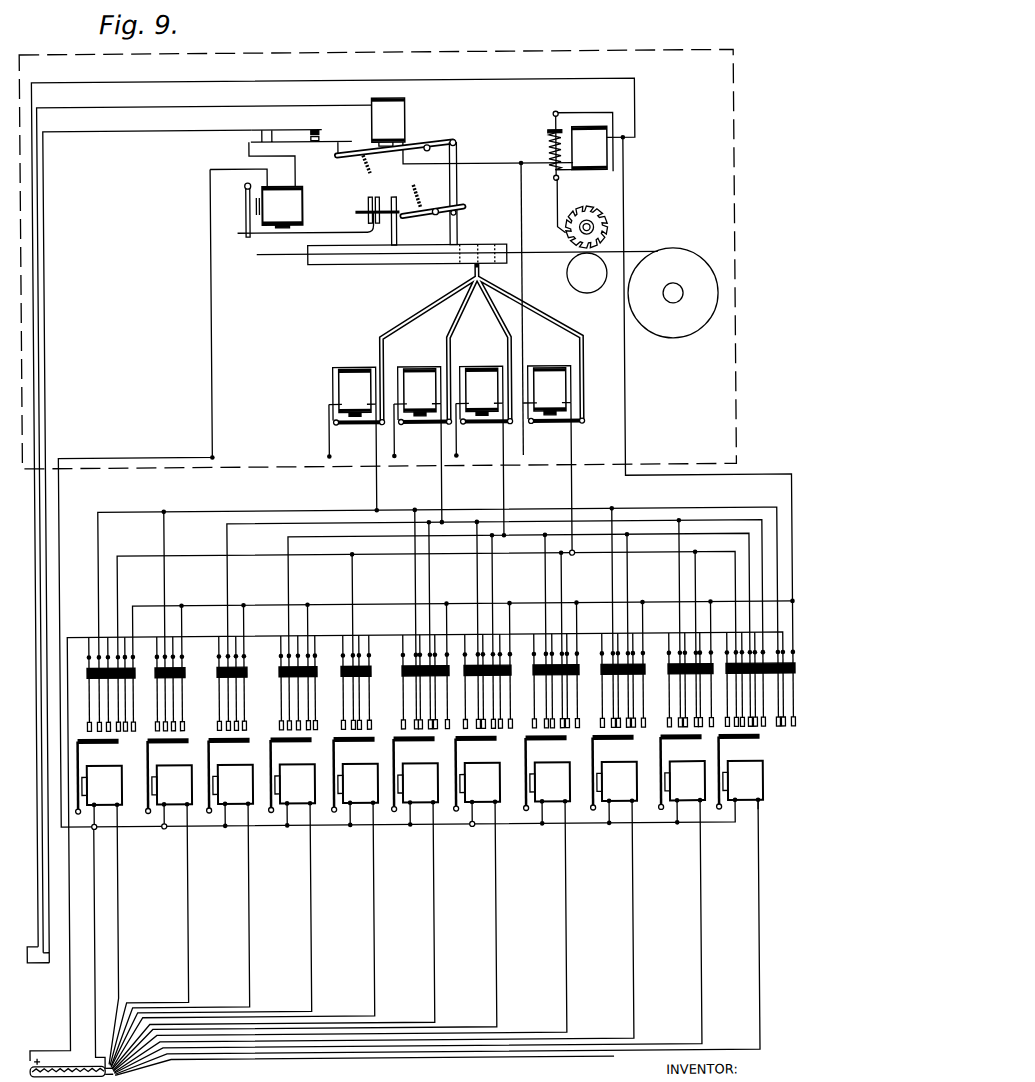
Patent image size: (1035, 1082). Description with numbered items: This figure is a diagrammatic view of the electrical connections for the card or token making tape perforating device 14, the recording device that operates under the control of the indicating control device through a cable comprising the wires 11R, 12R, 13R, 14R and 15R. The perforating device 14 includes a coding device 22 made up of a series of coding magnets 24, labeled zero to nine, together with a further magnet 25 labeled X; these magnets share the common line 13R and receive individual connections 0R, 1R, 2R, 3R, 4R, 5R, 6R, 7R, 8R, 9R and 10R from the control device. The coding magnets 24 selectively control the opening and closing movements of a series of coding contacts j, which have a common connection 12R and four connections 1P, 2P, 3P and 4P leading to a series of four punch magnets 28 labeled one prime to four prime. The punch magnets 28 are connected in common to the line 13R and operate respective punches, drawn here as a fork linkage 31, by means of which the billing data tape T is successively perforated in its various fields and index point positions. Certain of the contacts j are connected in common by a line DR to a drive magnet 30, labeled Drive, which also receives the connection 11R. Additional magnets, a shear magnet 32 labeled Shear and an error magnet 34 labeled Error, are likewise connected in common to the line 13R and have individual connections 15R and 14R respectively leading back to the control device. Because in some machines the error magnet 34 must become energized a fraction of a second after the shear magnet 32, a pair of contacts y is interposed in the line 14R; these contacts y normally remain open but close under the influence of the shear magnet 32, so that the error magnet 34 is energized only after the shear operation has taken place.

The wire 11R is at (164, 80).
The wire 15R is at (161, 105).
The wire 14R is at (159, 129).
The common line 13R is at (523, 220).
The wire 12R is at (81, 635).
The contacts y is at (300, 141).
The shear magnet 32 is at (406, 125).
The error magnet 34 is at (305, 198).
The drive magnet 30 is at (598, 173).
The tape perforating device 14 is at (356, 312).
The fork linkage 31 is at (492, 312).
The punch magnets 28 is at (360, 367).
The billing data tape T is at (658, 249).
The line DR is at (776, 478).
The connection 1P is at (197, 510).
The connection 2P is at (260, 523).
The connection 3P is at (323, 546).
The connection 4P is at (388, 563).
The coding contacts j is at (221, 698).
The coding magnets 24 is at (468, 810).
The magnet 25 is at (744, 805).
The coding device 22 is at (417, 916).
The individual connection 0R is at (115, 950).
The individual connection 1R is at (185, 947).
The individual connection 2R is at (246, 947).
The individual connection 3R is at (308, 947).
The individual connection 4R is at (371, 947).
The individual connection 5R is at (431, 947).
The individual connection 6R is at (493, 947).
The individual connection 7R is at (563, 947).
The individual connection 8R is at (630, 947).
The individual connection 9R is at (698, 947).
The individual connection 10R is at (756, 947).